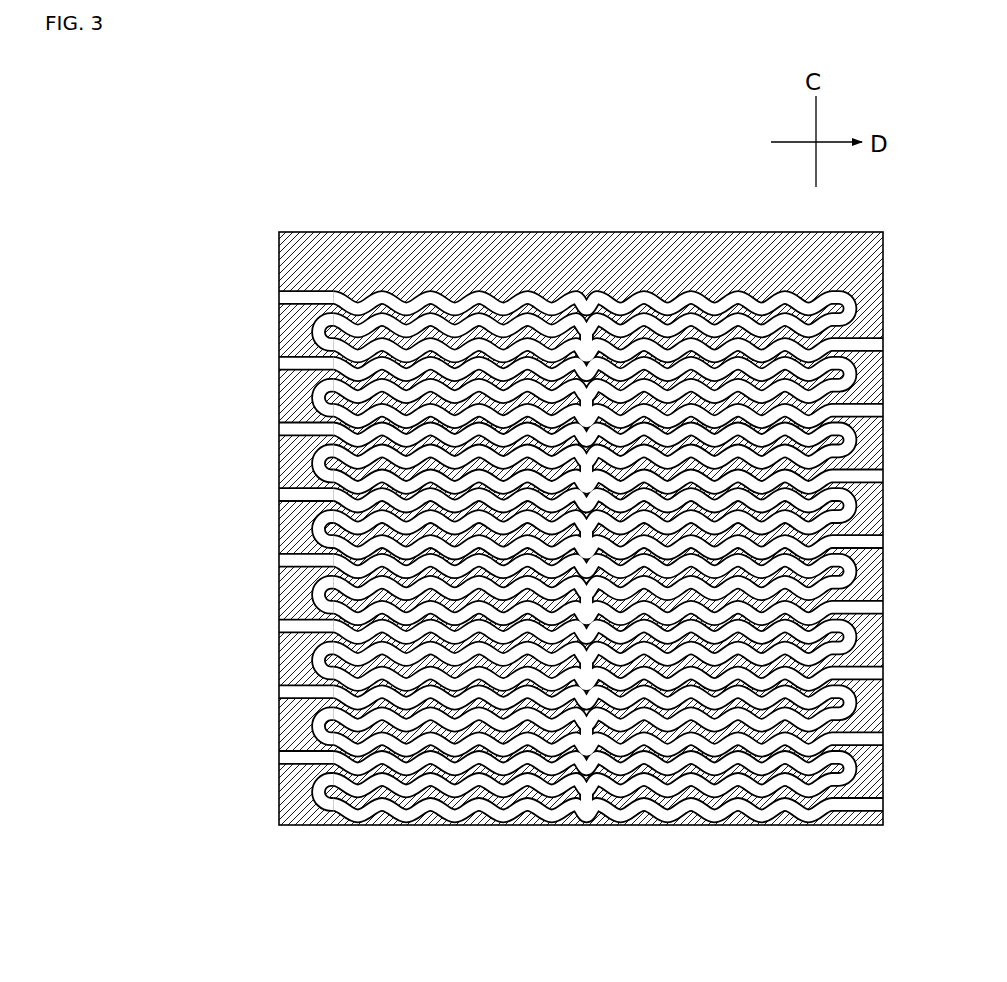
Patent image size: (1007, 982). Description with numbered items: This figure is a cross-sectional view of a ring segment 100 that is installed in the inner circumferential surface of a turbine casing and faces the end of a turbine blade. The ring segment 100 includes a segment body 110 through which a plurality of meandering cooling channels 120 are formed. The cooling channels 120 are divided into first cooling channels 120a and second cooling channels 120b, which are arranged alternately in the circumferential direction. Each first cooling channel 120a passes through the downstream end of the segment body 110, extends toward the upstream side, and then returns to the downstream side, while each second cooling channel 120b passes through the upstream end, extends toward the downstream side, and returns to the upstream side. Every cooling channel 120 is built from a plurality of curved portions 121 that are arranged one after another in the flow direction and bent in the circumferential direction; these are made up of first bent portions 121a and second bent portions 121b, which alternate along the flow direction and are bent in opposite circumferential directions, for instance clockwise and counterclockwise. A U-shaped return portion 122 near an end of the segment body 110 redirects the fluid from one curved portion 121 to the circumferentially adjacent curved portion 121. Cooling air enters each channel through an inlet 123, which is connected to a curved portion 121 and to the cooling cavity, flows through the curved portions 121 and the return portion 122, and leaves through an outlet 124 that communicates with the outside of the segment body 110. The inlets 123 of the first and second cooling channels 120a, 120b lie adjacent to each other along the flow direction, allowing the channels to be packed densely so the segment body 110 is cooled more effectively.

The ring segment 100 is at (362, 112).
The segment body 110 is at (280, 396).
The cooling channel 120 is at (284, 510).
The first cooling channel 120a is at (874, 555).
The second cooling channel 120b is at (862, 505).
The curved portion 121 is at (183, 595).
The first bent portion 121a is at (337, 590).
The second bent portion 121b is at (283, 637).
The return portion 122 is at (319, 793).
The inlet 123 is at (586, 316).
The outlet 124 is at (285, 292).